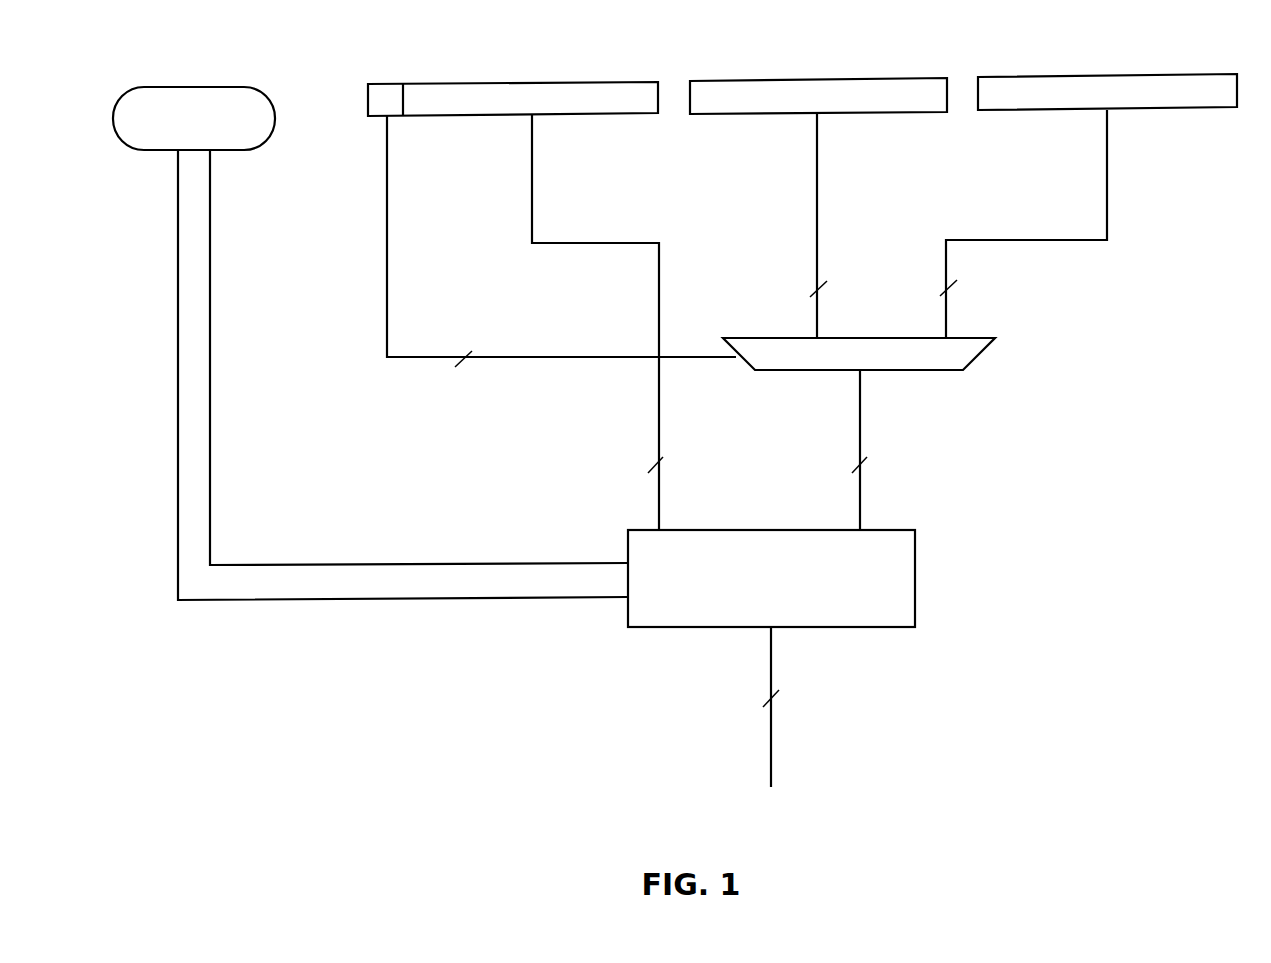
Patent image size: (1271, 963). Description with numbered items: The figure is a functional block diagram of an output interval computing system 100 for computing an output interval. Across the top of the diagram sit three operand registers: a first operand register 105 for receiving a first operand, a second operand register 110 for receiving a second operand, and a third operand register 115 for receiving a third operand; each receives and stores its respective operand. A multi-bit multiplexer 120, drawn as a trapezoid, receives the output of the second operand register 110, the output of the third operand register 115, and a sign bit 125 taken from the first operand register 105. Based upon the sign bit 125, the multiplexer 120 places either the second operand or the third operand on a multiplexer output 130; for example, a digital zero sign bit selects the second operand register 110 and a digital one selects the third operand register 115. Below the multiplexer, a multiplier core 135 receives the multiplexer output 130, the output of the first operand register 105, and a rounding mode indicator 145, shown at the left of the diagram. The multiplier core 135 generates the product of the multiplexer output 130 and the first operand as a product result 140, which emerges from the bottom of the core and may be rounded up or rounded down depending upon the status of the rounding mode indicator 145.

The output interval computing system 100 is at (1061, 24).
The first operand register 105 is at (566, 81).
The second operand register 110 is at (853, 77).
The third operand register 115 is at (1205, 73).
The multi-bit multiplexer 120 is at (982, 354).
The sign bit 125 is at (390, 83).
The multiplexer output 130 is at (860, 385).
The multiplier core 135 is at (916, 575).
The product result 140 is at (771, 755).
The rounding mode indicator 145 is at (197, 84).